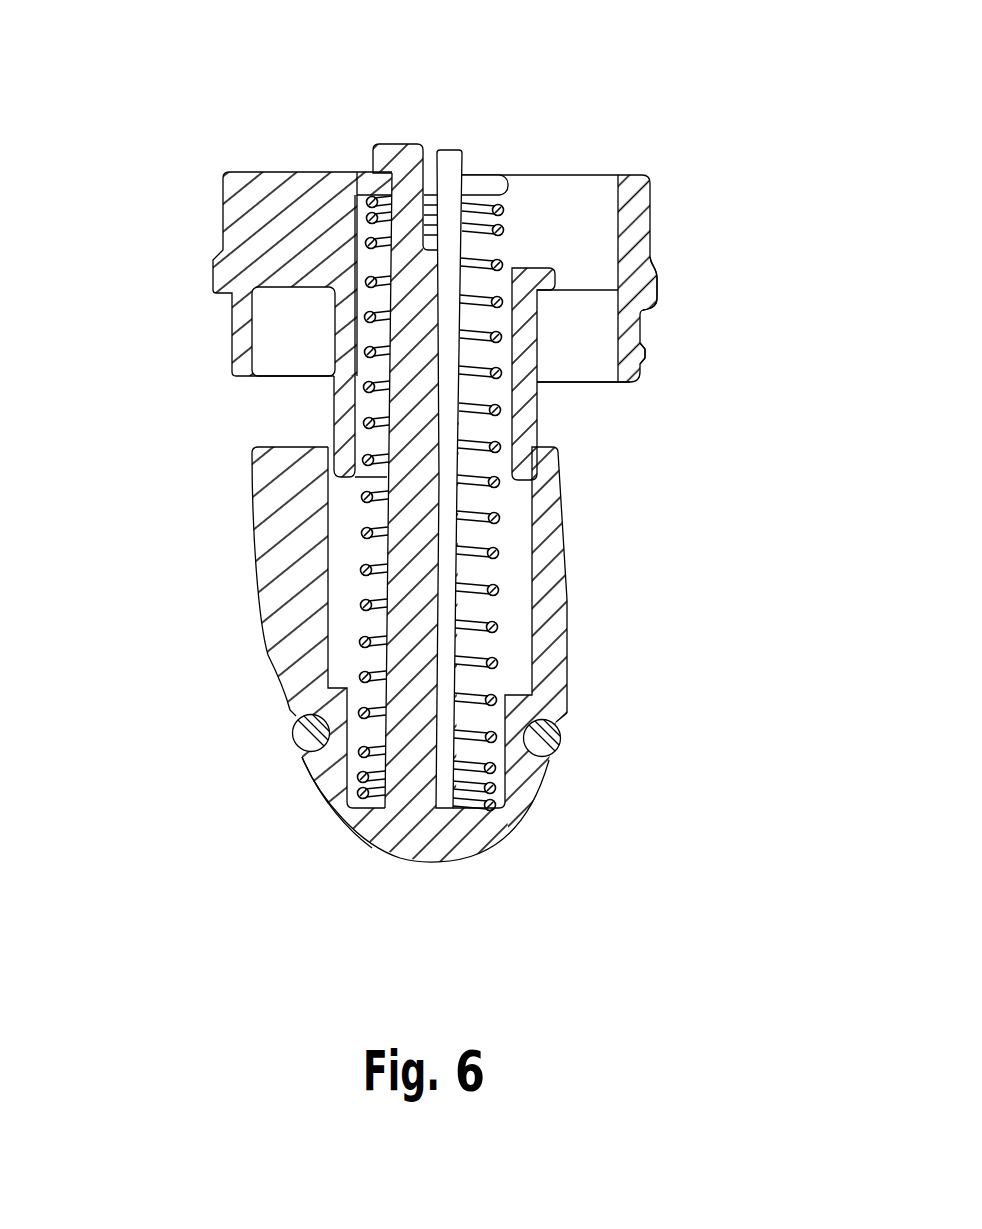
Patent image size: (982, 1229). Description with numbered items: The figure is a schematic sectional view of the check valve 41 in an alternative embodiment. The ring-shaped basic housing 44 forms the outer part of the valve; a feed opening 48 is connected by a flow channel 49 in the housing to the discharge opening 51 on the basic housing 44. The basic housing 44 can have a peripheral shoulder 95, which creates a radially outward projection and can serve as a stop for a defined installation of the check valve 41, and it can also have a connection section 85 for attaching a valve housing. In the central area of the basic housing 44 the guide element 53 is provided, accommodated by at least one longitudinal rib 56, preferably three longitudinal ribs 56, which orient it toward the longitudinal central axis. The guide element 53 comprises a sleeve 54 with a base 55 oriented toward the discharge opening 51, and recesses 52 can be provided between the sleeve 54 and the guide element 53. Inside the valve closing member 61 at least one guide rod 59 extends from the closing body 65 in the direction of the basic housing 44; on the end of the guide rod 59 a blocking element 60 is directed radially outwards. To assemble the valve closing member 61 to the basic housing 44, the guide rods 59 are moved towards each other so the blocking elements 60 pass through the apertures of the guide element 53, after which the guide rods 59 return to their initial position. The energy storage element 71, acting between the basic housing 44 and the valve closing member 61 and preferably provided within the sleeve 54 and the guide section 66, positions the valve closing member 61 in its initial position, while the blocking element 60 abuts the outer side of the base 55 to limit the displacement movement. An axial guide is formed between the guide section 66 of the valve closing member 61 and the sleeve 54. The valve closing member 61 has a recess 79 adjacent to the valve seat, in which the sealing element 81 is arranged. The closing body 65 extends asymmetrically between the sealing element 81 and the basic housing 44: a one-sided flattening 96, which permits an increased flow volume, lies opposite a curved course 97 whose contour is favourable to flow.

The check valve 41 is at (155, 130).
The basic housing 44 is at (677, 183).
The feed opening 48 is at (588, 394).
The flow channel 49 is at (588, 352).
The discharge opening 51 is at (613, 120).
The recesses 52 is at (514, 237).
The guide element 53 is at (476, 164).
The sleeve 54 is at (343, 410).
The base 55 is at (356, 175).
The longitudinal ribs 56 is at (263, 203).
The guide rod 59 is at (405, 518).
The blocking element 60 is at (374, 162).
The valve closing member 61 is at (538, 830).
The closing body 65 is at (418, 848).
The guide section 66 is at (522, 516).
The energy storage element 71 is at (387, 603).
The recess 79 is at (310, 762).
The sealing element 81 is at (296, 738).
The connection section 85 is at (655, 350).
The peripheral shoulder 95 is at (678, 293).
The one-sided flattening 96 is at (582, 575).
The curved course 97 is at (233, 517).